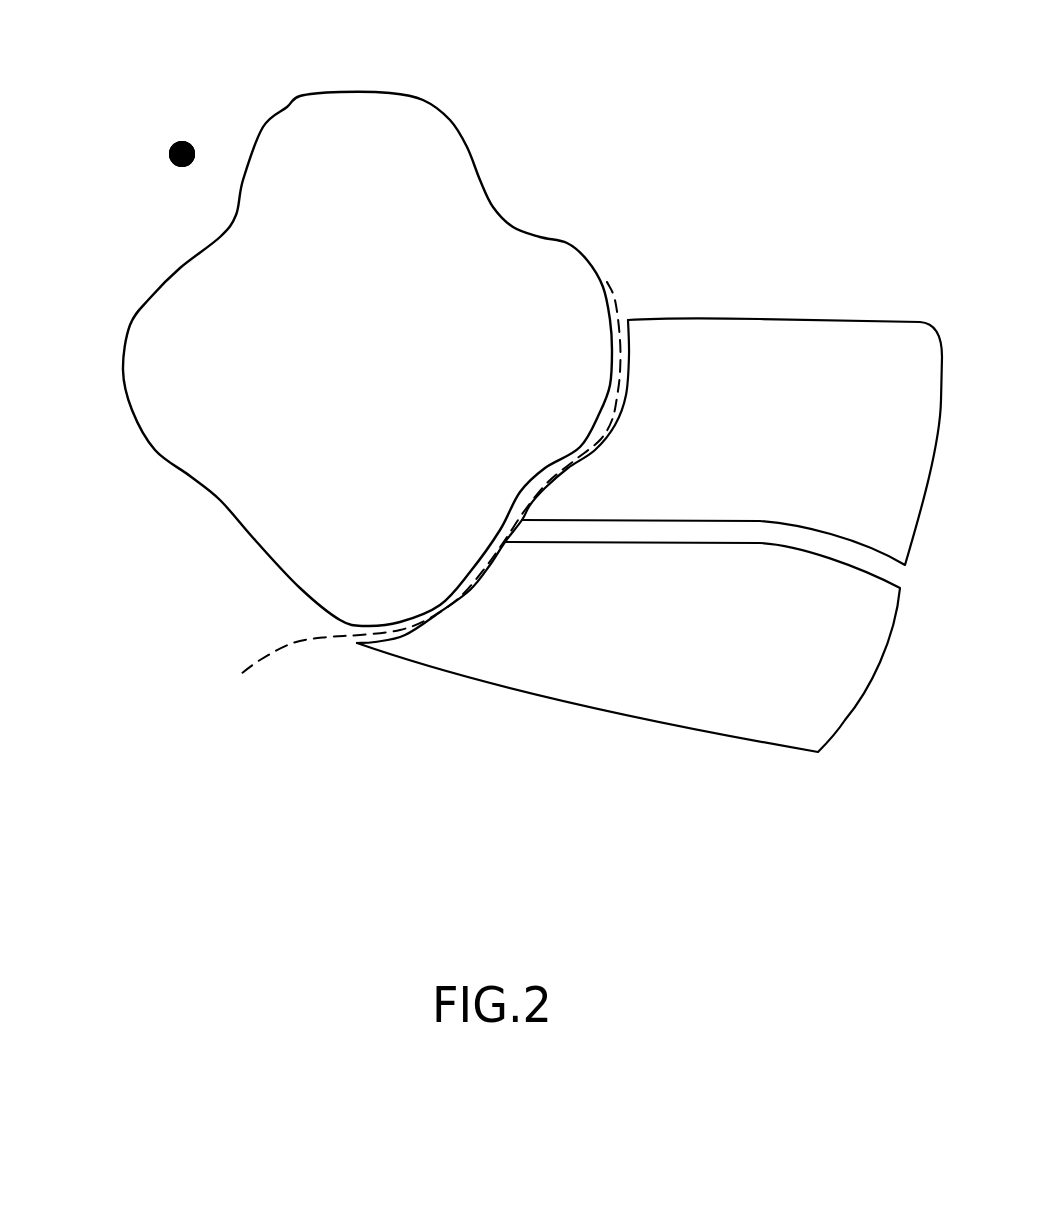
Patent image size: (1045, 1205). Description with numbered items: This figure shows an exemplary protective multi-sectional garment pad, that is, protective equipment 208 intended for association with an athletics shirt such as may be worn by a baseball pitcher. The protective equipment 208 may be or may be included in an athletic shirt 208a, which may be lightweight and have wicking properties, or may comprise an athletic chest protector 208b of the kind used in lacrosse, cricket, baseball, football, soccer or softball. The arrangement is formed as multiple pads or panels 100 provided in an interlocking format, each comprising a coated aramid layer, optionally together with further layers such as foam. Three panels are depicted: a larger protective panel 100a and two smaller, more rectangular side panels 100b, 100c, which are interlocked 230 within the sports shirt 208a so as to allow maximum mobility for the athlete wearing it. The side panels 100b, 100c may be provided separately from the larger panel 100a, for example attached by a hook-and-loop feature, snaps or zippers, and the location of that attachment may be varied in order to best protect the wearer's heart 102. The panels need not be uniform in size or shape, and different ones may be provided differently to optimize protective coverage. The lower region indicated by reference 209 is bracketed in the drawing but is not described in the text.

The multiple pads or panels 100 is at (943, 286).
The larger protective panel 100a is at (390, 362).
The side panel 100b is at (773, 444).
The side panel 100c is at (698, 644).
The wearer's heart 102 is at (725, 300).
The protective equipment 208 is at (210, 80).
The athletic shirt 208a is at (182, 154).
The athletic chest protector 208b is at (182, 154).
The lower edge region 209 is at (810, 930).
The interlocked 230 is at (258, 660).